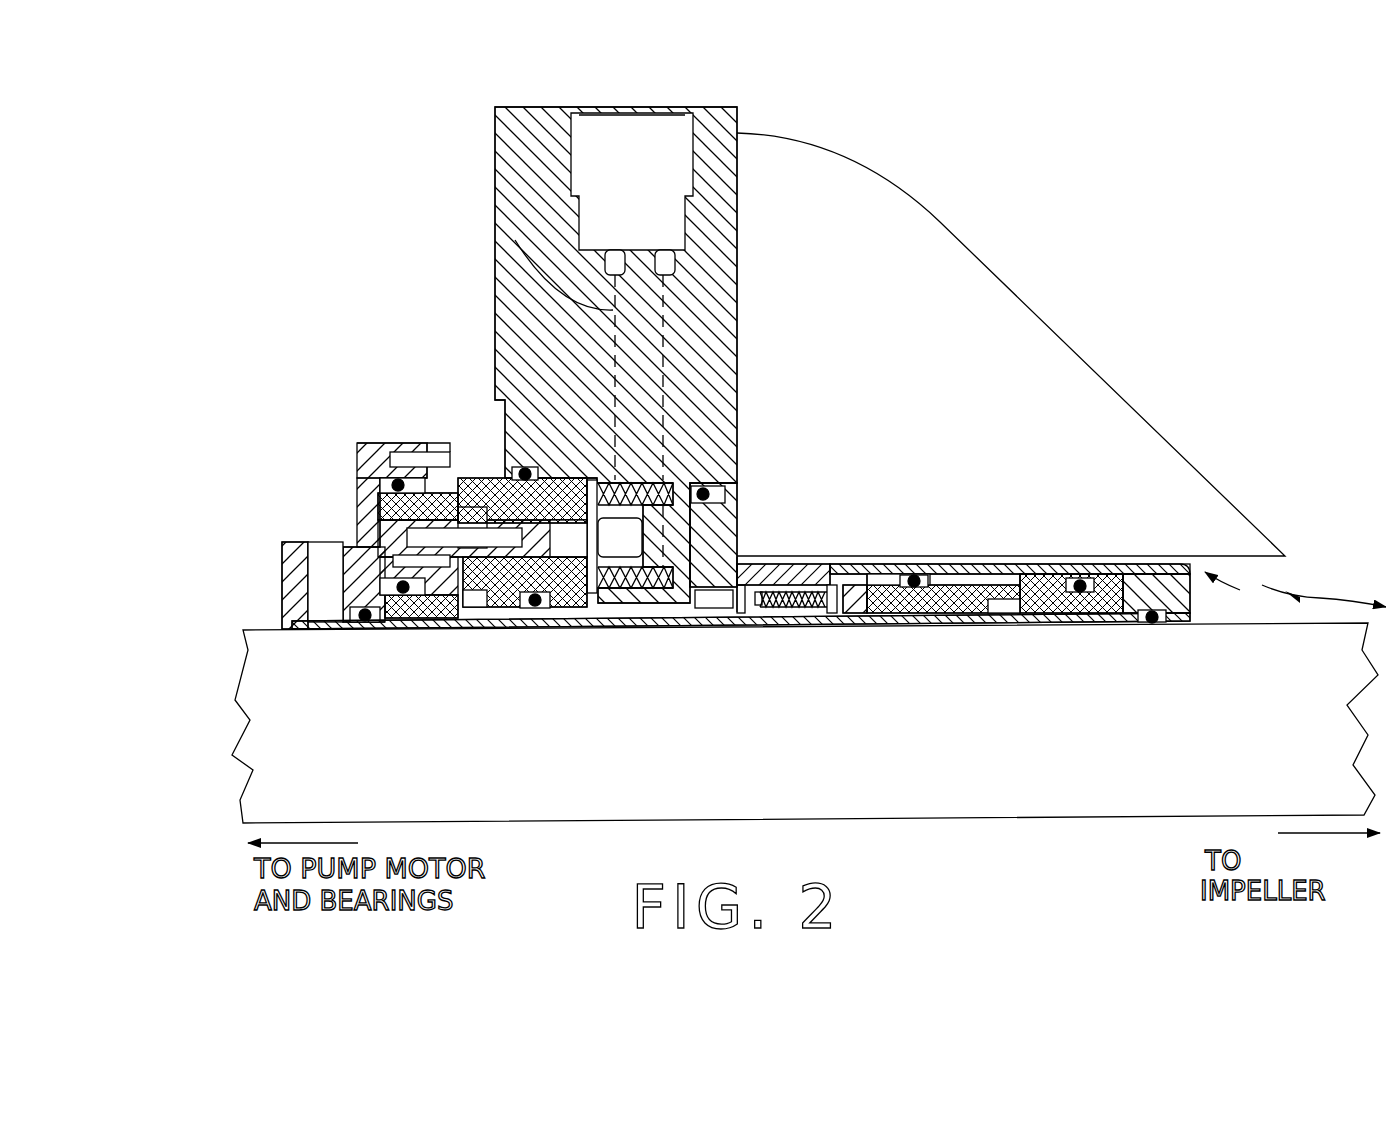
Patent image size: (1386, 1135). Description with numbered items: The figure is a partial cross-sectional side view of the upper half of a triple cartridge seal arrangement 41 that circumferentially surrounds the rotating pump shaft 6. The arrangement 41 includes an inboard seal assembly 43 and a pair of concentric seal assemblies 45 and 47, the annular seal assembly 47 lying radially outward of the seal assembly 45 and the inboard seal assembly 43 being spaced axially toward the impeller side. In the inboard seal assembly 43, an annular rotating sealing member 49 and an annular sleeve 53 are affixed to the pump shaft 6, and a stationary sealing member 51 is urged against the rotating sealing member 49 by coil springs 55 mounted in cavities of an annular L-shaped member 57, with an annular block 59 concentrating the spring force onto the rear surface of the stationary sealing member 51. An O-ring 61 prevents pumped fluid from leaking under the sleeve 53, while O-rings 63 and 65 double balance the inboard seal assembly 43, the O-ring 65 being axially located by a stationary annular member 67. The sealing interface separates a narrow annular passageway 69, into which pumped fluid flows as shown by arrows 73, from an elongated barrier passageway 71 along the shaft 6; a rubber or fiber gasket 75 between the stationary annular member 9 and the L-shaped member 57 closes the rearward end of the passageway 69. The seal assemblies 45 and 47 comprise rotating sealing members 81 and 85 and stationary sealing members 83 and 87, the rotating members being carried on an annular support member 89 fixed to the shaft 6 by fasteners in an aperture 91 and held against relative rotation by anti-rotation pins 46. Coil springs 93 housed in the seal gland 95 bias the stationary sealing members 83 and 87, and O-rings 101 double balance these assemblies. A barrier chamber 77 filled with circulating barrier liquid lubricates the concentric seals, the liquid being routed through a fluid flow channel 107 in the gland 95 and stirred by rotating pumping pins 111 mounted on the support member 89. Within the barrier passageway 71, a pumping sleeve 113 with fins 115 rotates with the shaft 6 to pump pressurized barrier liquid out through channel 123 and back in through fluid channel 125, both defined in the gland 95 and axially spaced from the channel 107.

The pump shaft 6 is at (970, 795).
The stationary annular member 9 is at (917, 290).
The triple cartridge seal arrangement 41 is at (392, 258).
The inboard seal assembly 43 is at (1068, 507).
The seal assembly 45 is at (425, 678).
The anti-rotation pins 46 is at (420, 457).
The annular seal assembly 47 is at (418, 410).
The rotating sealing member 49 is at (1063, 627).
The stationary sealing member 51 is at (983, 627).
The sleeve 53 is at (1163, 568).
The coil spring 55 is at (783, 627).
The L-shaped member 57 is at (735, 500).
The annular block 59 is at (853, 627).
The O-ring 61 is at (1147, 627).
The O-ring 63 is at (1077, 568).
The O-ring 65 is at (913, 568).
The annular member 67 is at (877, 568).
The narrow annular passageway 69 is at (977, 568).
The fluid passageway 71 is at (487, 628).
The arrows 73 is at (1262, 585).
The seal or gasket 75 is at (740, 520).
The barrier chamber 77 is at (478, 480).
The rotating annular sealing member 81 is at (390, 622).
The stationary annular sealing member 83 is at (553, 627).
The rotating annular sealing member 85 is at (387, 483).
The stationary annular sealing member 87 is at (495, 460).
The annular support member 89 is at (363, 515).
The aperture 91 is at (290, 585).
The coil springs 93 is at (665, 485).
The seal gland 95 is at (545, 119).
The O-rings 101 is at (392, 450).
The fluid flow channel 107 is at (578, 230).
The pumping pins 111 is at (510, 628).
The pumping sleeve 113 is at (722, 627).
The fins or paddle members 115 is at (740, 562).
The channel 123 is at (672, 268).
The fluid channel 125 is at (665, 322).